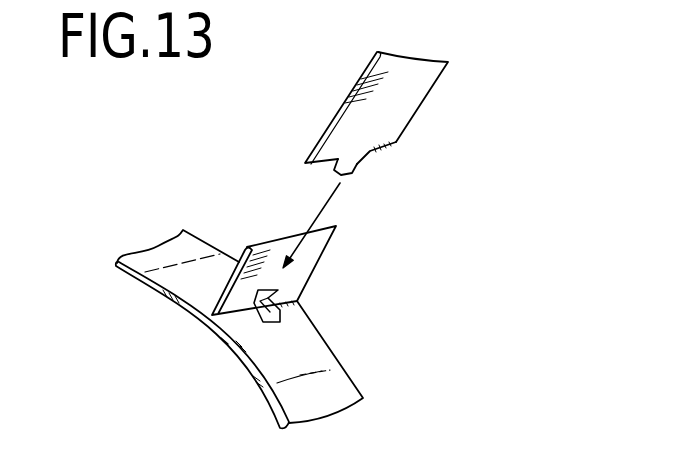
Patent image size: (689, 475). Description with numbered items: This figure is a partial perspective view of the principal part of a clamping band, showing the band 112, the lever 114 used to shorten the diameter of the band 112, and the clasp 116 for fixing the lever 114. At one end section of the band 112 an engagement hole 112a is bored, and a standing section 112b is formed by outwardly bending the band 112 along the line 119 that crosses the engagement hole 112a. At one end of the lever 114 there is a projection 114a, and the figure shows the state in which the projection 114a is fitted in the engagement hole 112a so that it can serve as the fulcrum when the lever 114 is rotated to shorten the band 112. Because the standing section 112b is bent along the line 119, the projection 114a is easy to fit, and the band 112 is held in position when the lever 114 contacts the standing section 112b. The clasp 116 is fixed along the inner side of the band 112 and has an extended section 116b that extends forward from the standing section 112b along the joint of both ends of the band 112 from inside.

The lever 114 is at (430, 82).
The projection 114a is at (357, 168).
The standing section 112b is at (320, 249).
The engagement hole 112a is at (297, 305).
The band 112 is at (345, 383).
The clasp 116 is at (272, 407).
The extended section 116b is at (134, 275).
The line 119 is at (221, 338).